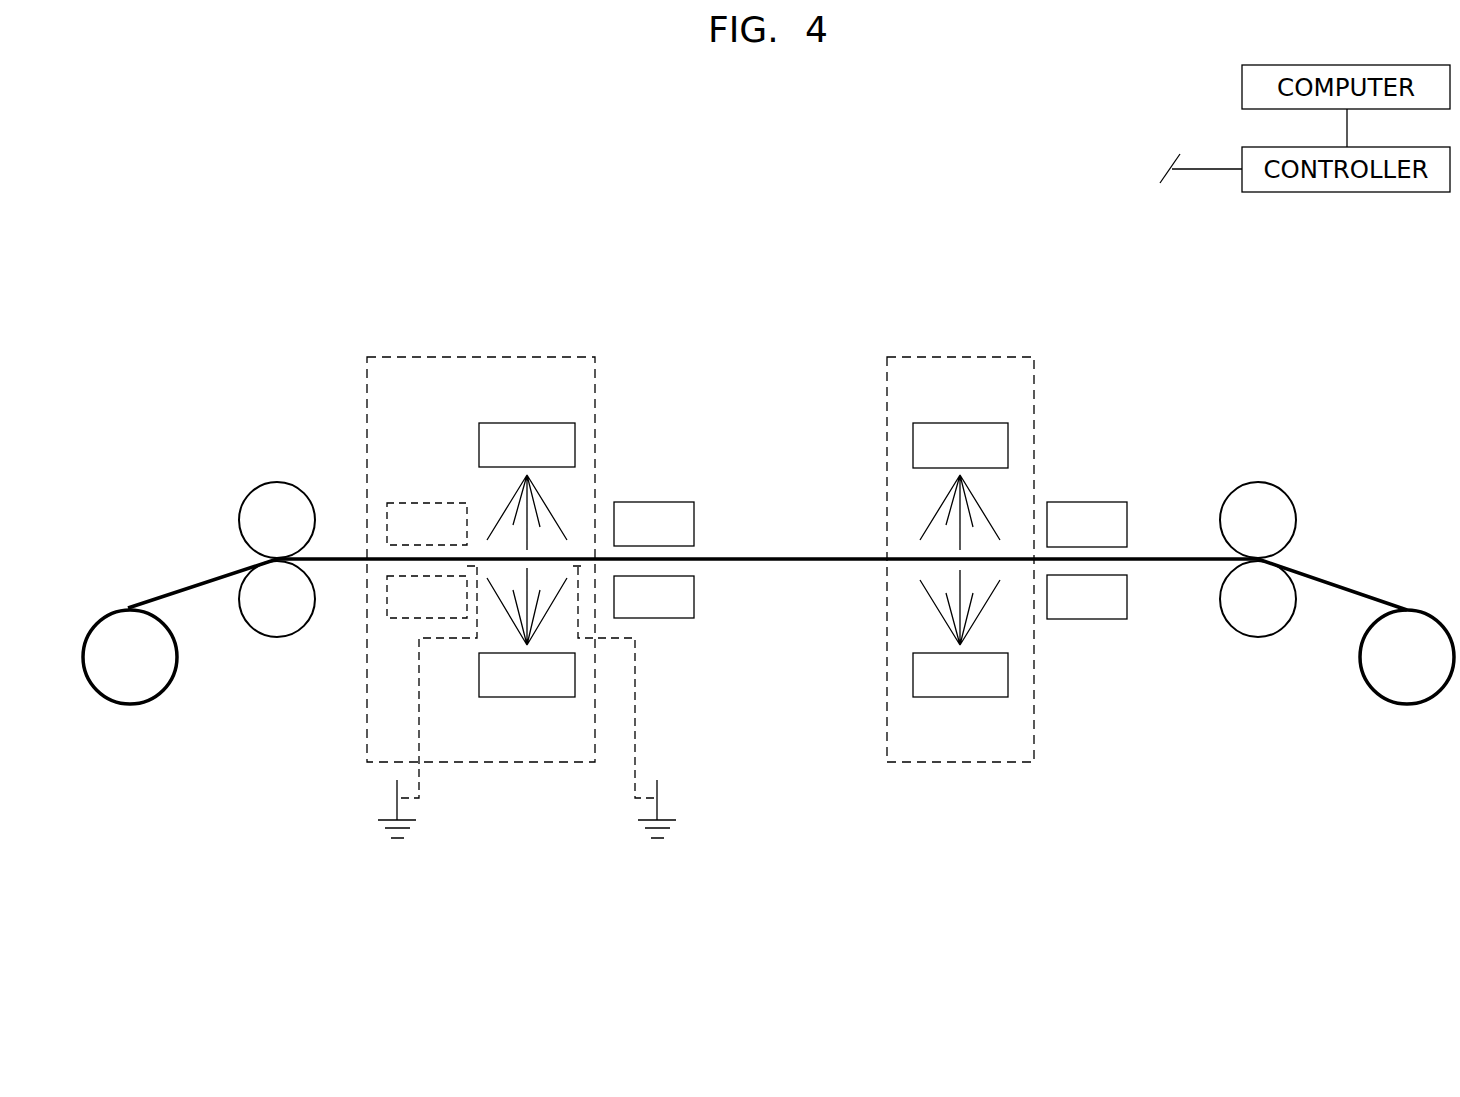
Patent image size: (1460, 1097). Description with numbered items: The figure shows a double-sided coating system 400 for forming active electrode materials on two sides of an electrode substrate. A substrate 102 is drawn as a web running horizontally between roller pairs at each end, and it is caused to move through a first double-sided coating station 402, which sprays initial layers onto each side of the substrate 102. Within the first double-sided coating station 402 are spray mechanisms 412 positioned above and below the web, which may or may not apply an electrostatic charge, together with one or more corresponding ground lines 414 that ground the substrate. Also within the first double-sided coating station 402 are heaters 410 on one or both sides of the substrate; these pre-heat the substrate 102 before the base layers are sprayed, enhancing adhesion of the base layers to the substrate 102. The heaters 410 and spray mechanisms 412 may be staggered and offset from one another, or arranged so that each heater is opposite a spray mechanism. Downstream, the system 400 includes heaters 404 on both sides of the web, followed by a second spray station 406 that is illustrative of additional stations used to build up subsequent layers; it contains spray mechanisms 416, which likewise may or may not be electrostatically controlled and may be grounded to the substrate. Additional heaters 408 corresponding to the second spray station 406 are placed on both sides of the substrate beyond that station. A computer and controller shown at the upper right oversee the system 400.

The double-sided coating system 400 is at (835, 147).
The substrate 102 is at (333, 558).
The first double-sided coating station 402 is at (503, 357).
The heaters 404 is at (648, 502).
The second spray station 406 is at (977, 357).
The additional heaters 408 is at (1092, 502).
The heaters 410 is at (423, 503).
The spray mechanisms 412 is at (523, 423).
The ground lines 414 is at (419, 775).
The spray mechanisms 416 is at (987, 423).